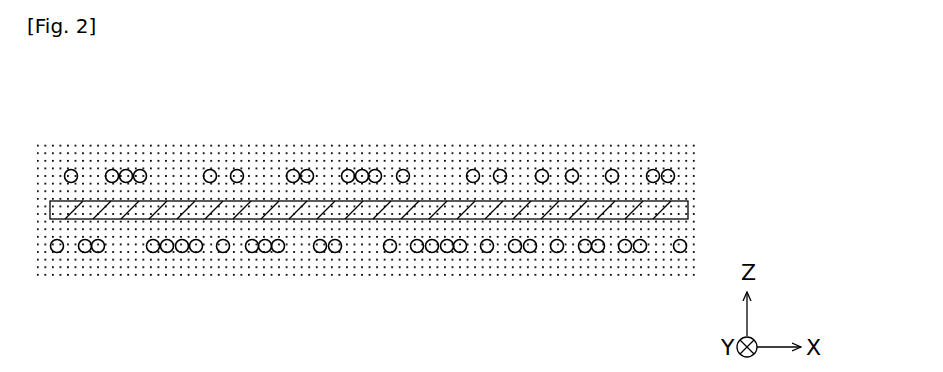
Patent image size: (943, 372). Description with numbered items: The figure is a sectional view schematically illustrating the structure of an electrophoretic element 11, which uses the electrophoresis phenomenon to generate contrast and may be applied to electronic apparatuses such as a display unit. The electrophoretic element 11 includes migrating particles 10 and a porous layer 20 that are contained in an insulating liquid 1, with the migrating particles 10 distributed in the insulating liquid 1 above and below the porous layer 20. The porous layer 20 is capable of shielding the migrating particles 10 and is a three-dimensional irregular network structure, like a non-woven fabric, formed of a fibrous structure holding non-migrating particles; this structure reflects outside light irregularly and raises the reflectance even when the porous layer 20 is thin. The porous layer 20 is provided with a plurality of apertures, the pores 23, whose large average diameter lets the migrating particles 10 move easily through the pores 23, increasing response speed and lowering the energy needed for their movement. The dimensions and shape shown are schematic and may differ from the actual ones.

The insulating liquid 1 is at (204, 268).
The migrating particles 10 is at (447, 252).
The electrophoretic element 11 is at (441, 206).
The porous layer 20 is at (688, 208).
The pores 23 is at (555, 210).